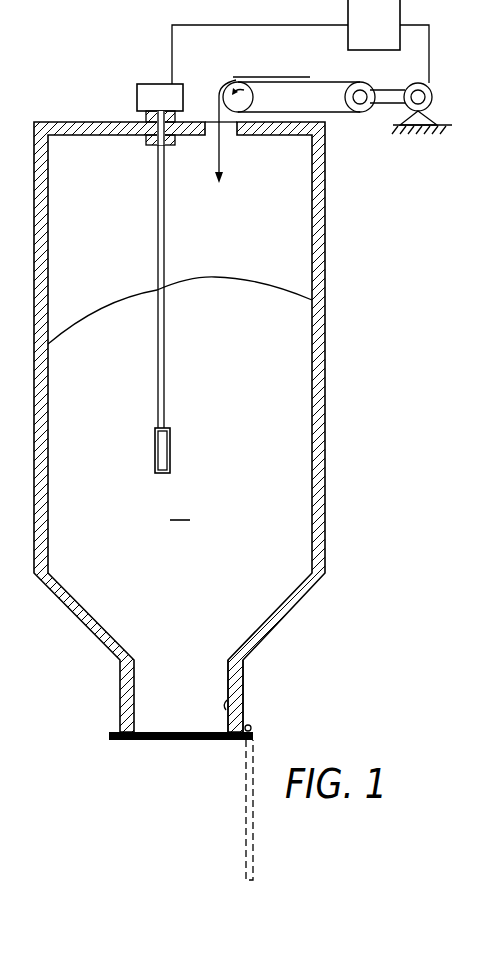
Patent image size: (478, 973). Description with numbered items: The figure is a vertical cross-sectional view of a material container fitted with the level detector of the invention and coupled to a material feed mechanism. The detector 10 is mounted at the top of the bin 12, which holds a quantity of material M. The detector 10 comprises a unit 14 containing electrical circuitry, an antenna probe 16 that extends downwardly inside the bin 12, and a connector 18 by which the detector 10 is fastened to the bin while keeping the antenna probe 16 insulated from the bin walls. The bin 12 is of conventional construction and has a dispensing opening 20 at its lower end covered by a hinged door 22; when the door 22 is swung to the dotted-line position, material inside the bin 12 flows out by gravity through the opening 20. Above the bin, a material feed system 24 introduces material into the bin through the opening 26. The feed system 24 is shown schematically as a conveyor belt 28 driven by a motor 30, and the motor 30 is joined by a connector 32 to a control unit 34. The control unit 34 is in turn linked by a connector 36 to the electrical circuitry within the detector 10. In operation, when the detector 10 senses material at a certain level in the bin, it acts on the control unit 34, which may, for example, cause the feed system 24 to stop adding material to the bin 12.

The detector 10 is at (100, 84).
The bin 12 is at (318, 438).
The unit containing electrical circuitry 14 is at (180, 98).
The antenna probe 16 is at (165, 241).
The connector 18 is at (148, 142).
The dispensing opening 20 is at (244, 688).
The hinged door 22 is at (140, 742).
The material feed system 24 is at (349, 131).
The opening 26 is at (240, 135).
The conveyor belt 28 is at (343, 82).
The motor 30 is at (437, 93).
The connector 32 is at (432, 45).
The control unit 34 is at (348, 9).
The connector 36 is at (272, 25).